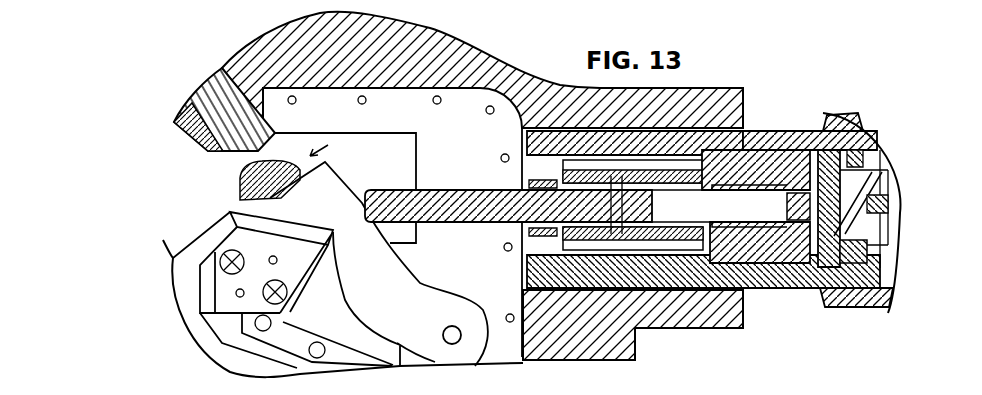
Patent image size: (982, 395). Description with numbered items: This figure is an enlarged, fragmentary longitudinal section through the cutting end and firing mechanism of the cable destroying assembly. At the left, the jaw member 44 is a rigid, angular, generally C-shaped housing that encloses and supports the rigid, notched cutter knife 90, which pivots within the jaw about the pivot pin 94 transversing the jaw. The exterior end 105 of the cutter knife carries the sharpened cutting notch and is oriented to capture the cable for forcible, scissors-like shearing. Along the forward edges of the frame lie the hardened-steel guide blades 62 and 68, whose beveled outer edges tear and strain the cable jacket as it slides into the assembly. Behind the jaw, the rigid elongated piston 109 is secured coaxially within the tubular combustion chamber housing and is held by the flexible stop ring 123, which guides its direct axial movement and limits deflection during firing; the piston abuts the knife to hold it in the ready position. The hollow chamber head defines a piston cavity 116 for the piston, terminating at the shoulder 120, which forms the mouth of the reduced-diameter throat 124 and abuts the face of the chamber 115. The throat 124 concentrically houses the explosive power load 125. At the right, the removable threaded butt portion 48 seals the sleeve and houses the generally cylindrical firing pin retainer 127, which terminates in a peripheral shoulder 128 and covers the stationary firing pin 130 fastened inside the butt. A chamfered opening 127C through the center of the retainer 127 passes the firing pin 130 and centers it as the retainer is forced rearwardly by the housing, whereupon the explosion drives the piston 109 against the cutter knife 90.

The jaw member 44 is at (392, 222).
The butt portion 48 is at (866, 302).
The guide blade 62 is at (208, 224).
The guide blade 68 is at (227, 153).
The cutter knife 90 is at (379, 264).
The pivot pin 94 is at (452, 334).
The exterior end of cutter knife 105 is at (291, 188).
The piston 109 is at (460, 195).
The combustion chamber 115 is at (787, 253).
The piston cavity 116 is at (636, 205).
The shoulder 120 is at (713, 190).
The stop ring 123 is at (537, 180).
The throat 124 is at (772, 205).
The explosive power load 125 is at (808, 224).
The firing pin retainer 127 is at (852, 158).
The chamfered opening 127C is at (805, 215).
The peripheral shoulder 128 is at (862, 253).
The firing pin 130 is at (888, 203).